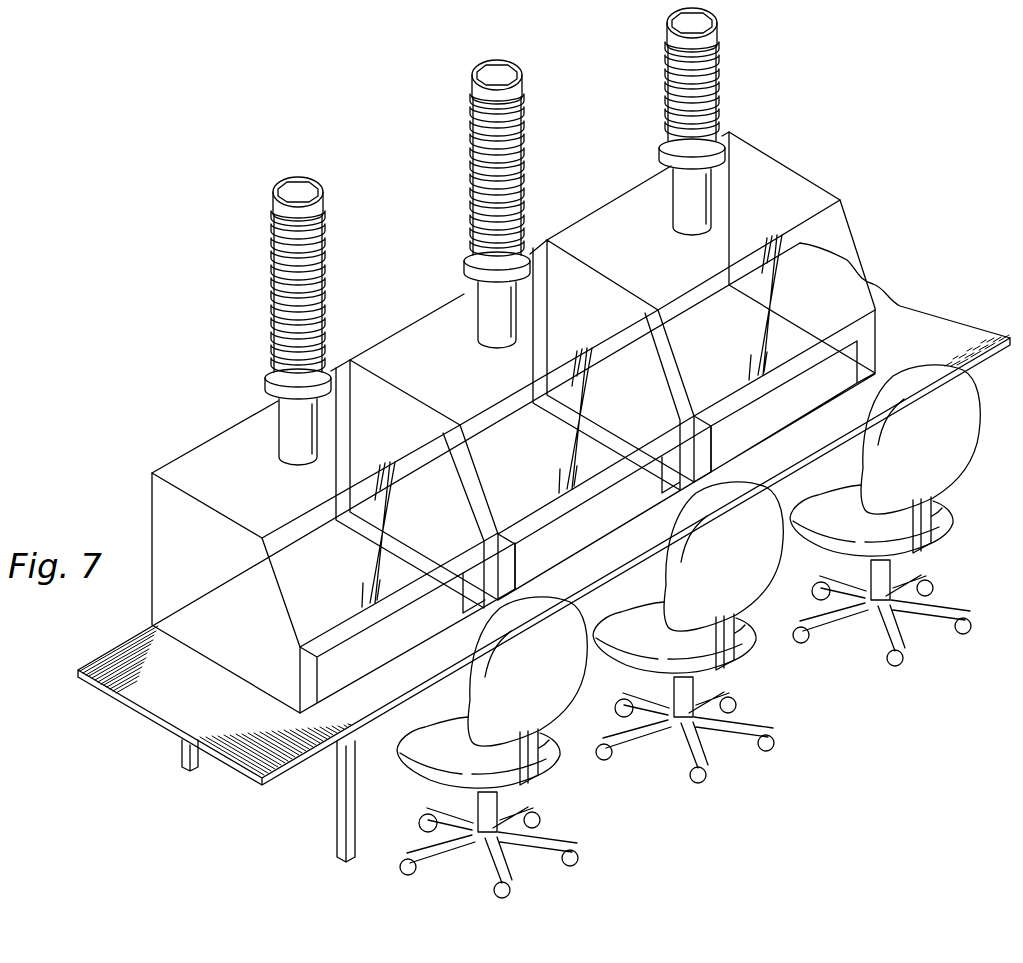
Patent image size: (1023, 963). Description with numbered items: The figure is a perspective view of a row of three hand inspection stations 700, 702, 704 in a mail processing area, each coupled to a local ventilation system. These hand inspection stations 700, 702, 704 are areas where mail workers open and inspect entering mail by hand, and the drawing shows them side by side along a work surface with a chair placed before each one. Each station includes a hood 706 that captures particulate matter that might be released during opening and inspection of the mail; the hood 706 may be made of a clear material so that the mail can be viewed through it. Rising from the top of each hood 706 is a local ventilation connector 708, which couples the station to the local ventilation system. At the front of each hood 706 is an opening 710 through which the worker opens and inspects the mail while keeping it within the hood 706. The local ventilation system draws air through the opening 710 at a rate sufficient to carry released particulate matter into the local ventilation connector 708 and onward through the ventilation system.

The hand inspection station 700 is at (212, 437).
The hand inspection station 702 is at (410, 322).
The hand inspection station 704 is at (608, 206).
The hood 706 is at (342, 584).
The local ventilation connector 708 is at (272, 287).
The opening 710 is at (383, 629).